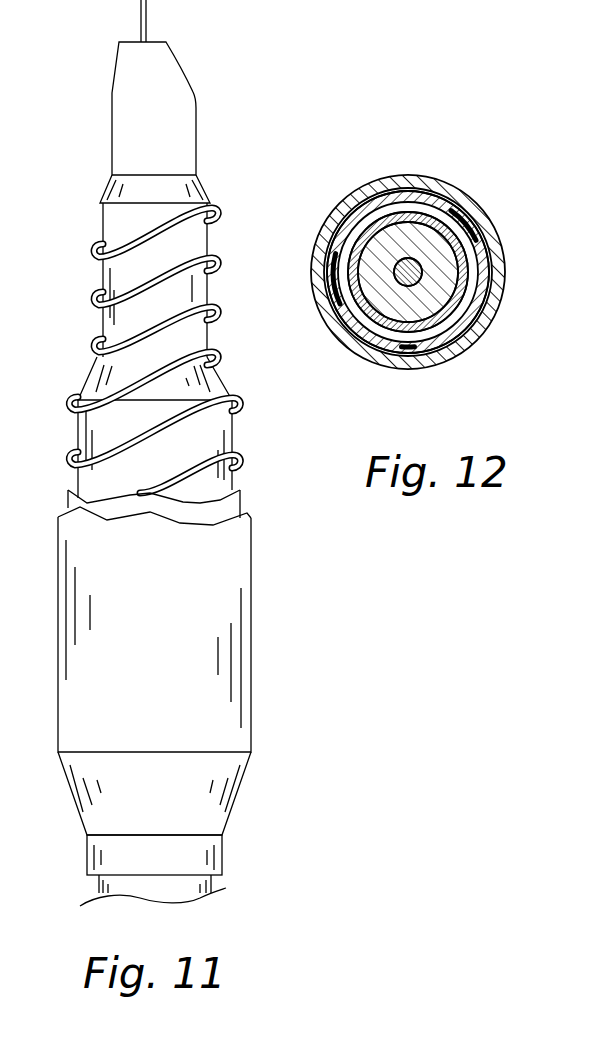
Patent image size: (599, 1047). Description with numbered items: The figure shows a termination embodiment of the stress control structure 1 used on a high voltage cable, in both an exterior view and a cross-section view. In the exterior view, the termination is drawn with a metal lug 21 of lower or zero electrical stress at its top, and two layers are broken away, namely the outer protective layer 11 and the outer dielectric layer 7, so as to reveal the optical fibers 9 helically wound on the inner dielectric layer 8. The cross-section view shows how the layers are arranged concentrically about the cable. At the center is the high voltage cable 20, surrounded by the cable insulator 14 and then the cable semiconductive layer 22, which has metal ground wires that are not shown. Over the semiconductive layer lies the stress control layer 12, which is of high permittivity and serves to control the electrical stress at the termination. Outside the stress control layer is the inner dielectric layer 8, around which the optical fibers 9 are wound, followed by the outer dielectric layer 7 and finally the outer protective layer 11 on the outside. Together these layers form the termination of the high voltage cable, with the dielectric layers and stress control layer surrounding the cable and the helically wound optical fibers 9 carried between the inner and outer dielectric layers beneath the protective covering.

In FIG. 11, the stress control structure 1 is at (51, 318).
In FIG. 12, the stress control structure 1 is at (449, 170).
In FIG. 11, the outer dielectric layer 7 is at (227, 503).
In FIG. 12, the outer dielectric layer 7 is at (498, 250).
In FIG. 11, the inner dielectric layer 8 is at (193, 240).
In FIG. 12, the inner dielectric layer 8 is at (485, 277).
In FIG. 11, the optical fibers 9 is at (189, 317).
In FIG. 12, the optical fibers 9 is at (483, 237).
In FIG. 11, the outer protective layer 11 is at (189, 706).
In FIG. 12, the outer protective layer 11 is at (470, 207).
In FIG. 12, the stress control layer 12 is at (490, 317).
In FIG. 12, the cable insulator 14 is at (440, 307).
In FIG. 12, the high voltage cable 20 is at (370, 348).
In FIG. 11, the metal lug 21 is at (217, 97).
In FIG. 11, the cable semiconductive layer 22 is at (186, 404).
In FIG. 12, the cable semiconductive layer 22 is at (335, 305).